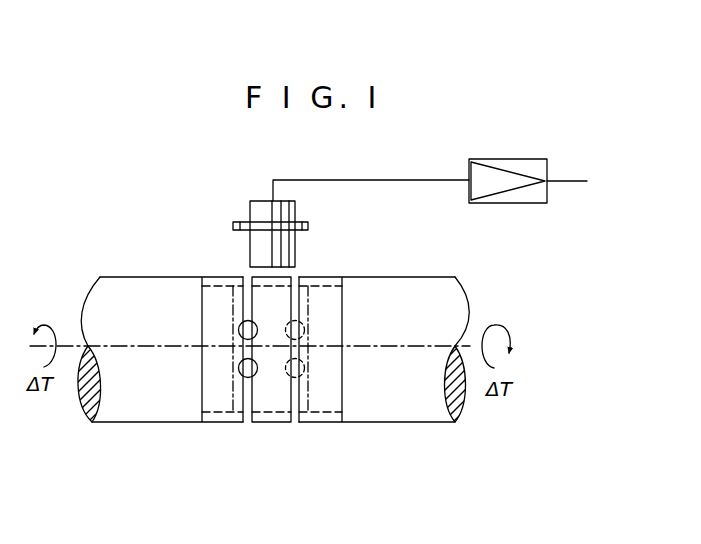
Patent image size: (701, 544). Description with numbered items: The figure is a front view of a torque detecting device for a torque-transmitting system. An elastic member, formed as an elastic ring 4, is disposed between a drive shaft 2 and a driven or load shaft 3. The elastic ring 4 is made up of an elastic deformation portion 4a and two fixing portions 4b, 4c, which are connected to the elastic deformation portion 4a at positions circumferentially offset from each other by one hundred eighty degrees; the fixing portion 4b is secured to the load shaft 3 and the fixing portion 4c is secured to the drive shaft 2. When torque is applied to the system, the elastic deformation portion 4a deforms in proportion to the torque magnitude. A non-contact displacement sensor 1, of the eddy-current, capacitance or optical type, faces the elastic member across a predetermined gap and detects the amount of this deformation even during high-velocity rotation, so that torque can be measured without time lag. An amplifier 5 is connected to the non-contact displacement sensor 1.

The non-contact displacement sensor 1 is at (259, 249).
The drive shaft 2 is at (152, 405).
The load shaft 3 is at (375, 405).
The elastic ring 4 is at (272, 400).
The elastic deformation portion 4a is at (270, 405).
The fixing portion 4b is at (314, 384).
The fixing portion 4c is at (217, 405).
The amplifier 5 is at (528, 205).